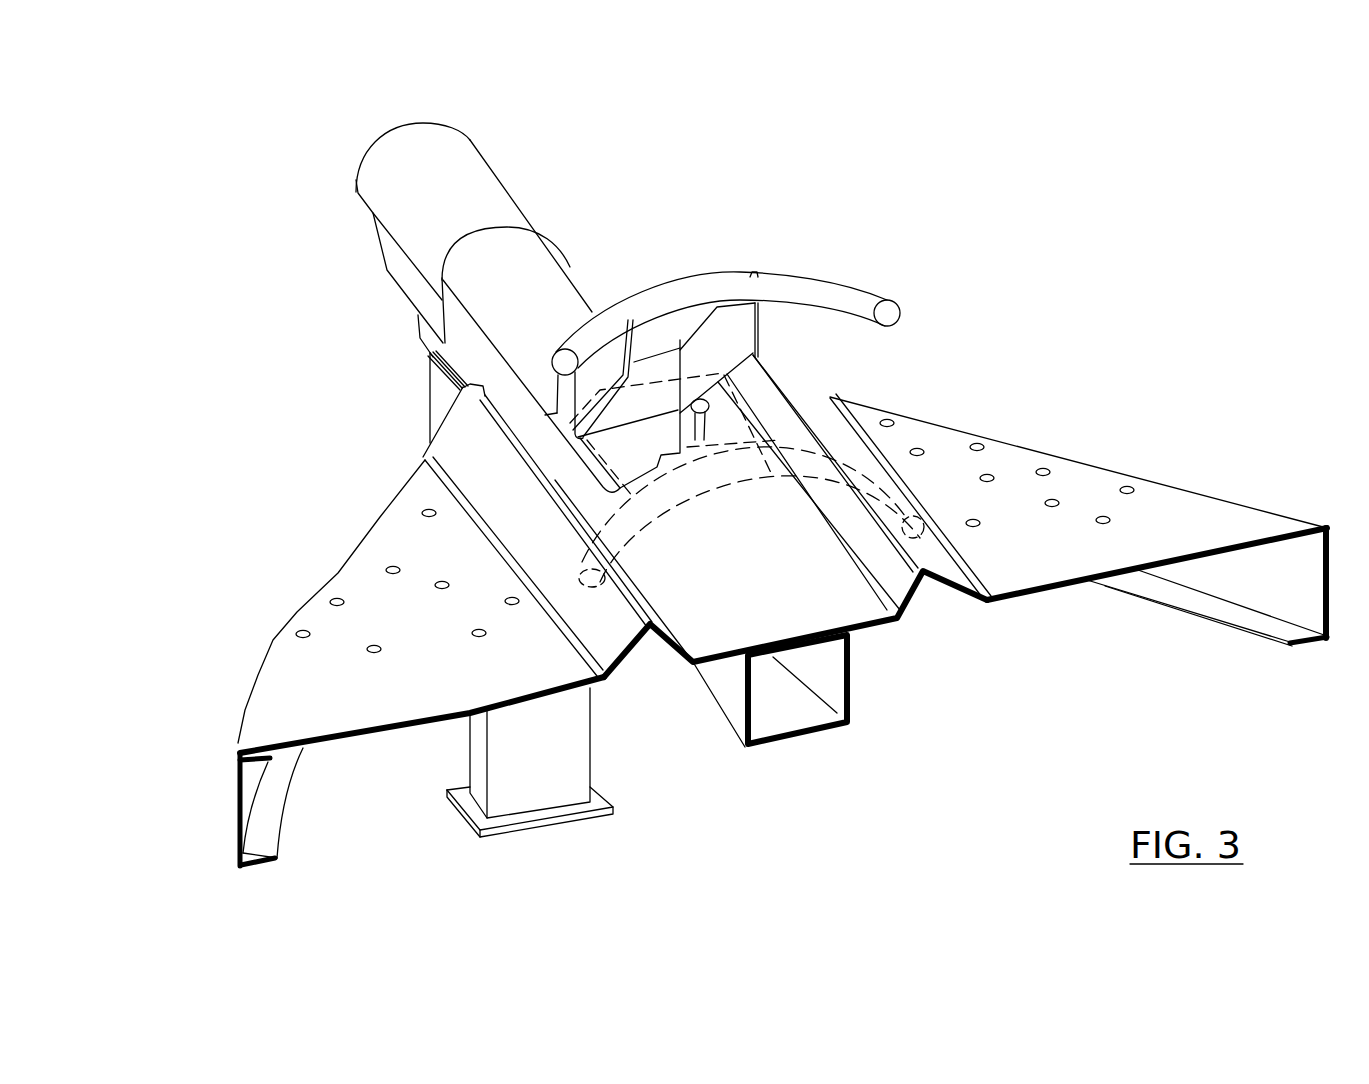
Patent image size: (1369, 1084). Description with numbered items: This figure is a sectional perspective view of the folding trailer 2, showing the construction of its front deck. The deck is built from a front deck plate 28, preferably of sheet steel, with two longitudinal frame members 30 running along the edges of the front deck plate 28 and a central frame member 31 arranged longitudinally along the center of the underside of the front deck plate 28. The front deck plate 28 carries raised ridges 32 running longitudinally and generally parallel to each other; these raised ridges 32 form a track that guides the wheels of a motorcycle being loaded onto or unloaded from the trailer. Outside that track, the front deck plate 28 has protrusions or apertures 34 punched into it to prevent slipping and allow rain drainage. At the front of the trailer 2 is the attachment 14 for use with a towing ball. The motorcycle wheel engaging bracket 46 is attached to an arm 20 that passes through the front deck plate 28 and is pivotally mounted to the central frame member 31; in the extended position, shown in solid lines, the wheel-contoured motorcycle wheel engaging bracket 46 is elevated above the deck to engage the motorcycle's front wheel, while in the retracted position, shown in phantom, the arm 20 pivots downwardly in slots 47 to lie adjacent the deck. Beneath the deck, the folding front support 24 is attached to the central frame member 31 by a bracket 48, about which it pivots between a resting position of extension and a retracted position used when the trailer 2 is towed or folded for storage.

The folding trailer 2 is at (222, 421).
The attachment for use with a towing ball 14 is at (441, 170).
The arm 20 is at (726, 338).
The folding front support 24 is at (533, 747).
The front deck plate 28 is at (1013, 497).
The longitudinal frame members 30 is at (238, 795).
The central frame member 31 is at (807, 730).
The raised ridges 32 is at (507, 453).
The protrusions or apertures 34 is at (303, 634).
The motorcycle wheel engaging bracket 46 is at (707, 293).
The slots 47 is at (530, 415).
The bracket 48 is at (450, 397).